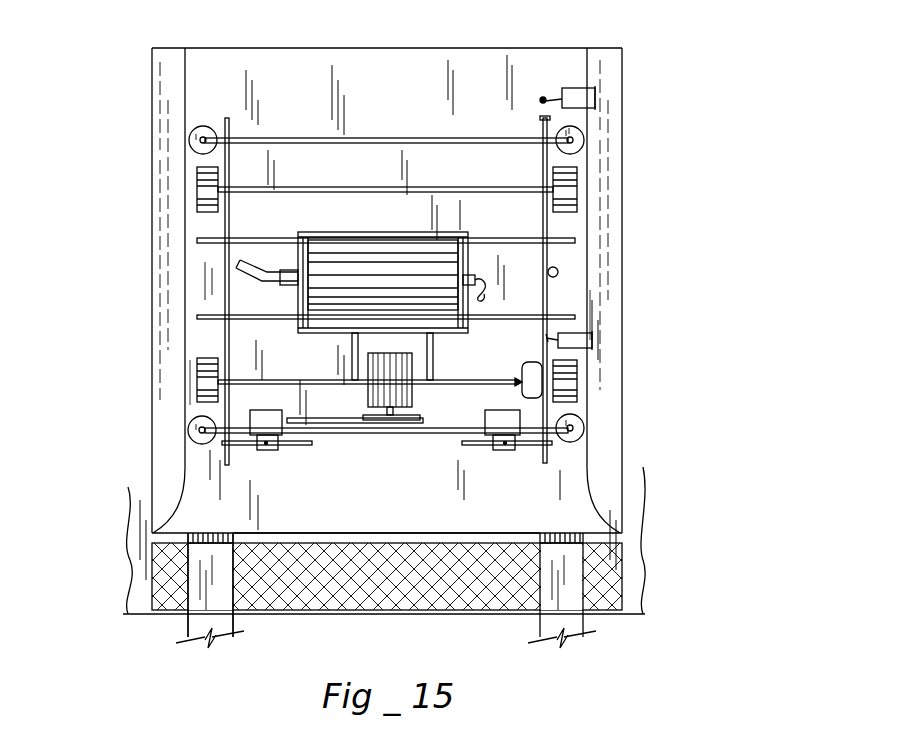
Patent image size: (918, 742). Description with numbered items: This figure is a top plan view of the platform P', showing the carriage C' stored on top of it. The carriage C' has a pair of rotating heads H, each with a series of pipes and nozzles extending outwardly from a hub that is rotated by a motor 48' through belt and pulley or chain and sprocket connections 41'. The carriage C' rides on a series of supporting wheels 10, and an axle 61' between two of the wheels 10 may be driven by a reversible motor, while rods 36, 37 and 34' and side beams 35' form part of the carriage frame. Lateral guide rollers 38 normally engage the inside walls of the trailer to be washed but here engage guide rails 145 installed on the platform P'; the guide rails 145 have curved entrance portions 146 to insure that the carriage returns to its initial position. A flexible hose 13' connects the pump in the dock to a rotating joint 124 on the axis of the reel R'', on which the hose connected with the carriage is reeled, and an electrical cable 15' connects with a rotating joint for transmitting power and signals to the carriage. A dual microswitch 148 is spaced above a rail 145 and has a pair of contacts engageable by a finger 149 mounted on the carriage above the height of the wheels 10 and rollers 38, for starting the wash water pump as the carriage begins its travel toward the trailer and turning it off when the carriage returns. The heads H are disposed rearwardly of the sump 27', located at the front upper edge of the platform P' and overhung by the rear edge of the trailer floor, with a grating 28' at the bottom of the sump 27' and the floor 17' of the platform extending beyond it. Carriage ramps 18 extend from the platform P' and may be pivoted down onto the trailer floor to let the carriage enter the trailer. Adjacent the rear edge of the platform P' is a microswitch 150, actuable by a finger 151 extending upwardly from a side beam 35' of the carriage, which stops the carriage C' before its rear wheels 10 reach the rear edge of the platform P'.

The platform P' is at (432, 331).
The curved entrance portion 146 is at (182, 490).
The guide rail 145 is at (193, 371).
The side beam 35' is at (398, 291).
The lateral guide roller 38 is at (190, 138).
The supporting wheel 10 is at (205, 188).
The upper rod 36 is at (375, 138).
The rod 37 is at (510, 240).
The axle 61' is at (380, 371).
The lower shaft 34' is at (386, 456).
The belt and pulley or chain and sprocket connections 41' is at (387, 448).
The rotating head H is at (262, 452).
The reel R'' is at (383, 290).
The flexible hose 13' is at (267, 246).
The rotating joint 124 is at (298, 282).
The electrical cable 15' is at (499, 293).
The finger 149 is at (548, 272).
The dual microswitch 148 is at (583, 333).
The microswitch 150 is at (583, 90).
The finger 151 is at (543, 118).
The motor 48' is at (373, 386).
The carriage C' is at (165, 281).
The floor 17' is at (347, 508).
The sump 27' is at (386, 517).
The grating 28' is at (387, 598).
The carriage ramp 18 is at (233, 627).